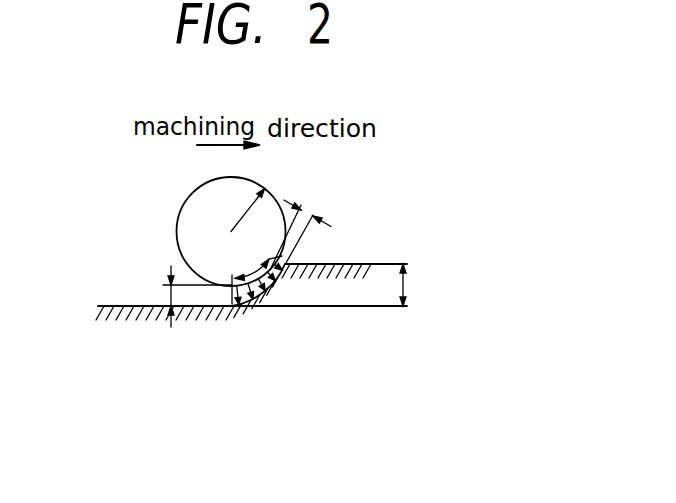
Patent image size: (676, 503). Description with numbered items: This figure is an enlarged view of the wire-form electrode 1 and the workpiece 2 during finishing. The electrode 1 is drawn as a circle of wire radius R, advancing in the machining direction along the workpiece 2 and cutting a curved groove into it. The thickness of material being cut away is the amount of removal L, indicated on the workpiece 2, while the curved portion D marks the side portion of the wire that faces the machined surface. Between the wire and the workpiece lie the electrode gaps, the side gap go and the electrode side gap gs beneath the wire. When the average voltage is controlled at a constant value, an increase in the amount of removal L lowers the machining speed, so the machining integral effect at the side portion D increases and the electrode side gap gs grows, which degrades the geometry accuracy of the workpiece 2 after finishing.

The wire-form electrode 1 is at (186, 201).
The workpiece 2 is at (353, 264).
The wire radius R is at (244, 210).
The side portion of the wire D is at (257, 271).
The side gap go is at (303, 218).
The electrode side gap gs is at (177, 296).
The amount of removal L is at (412, 285).